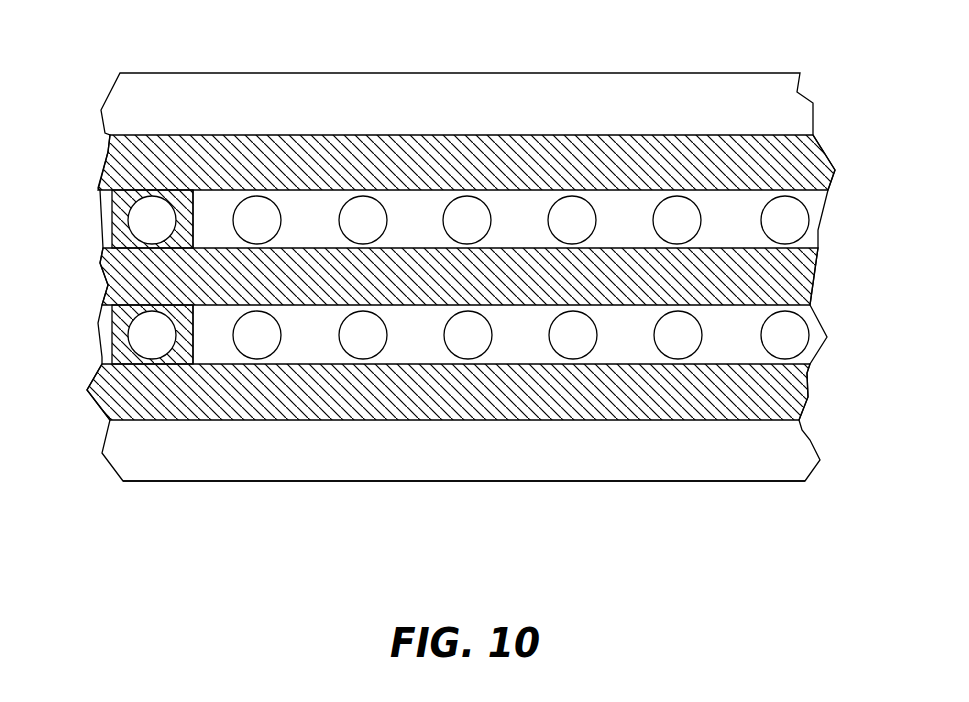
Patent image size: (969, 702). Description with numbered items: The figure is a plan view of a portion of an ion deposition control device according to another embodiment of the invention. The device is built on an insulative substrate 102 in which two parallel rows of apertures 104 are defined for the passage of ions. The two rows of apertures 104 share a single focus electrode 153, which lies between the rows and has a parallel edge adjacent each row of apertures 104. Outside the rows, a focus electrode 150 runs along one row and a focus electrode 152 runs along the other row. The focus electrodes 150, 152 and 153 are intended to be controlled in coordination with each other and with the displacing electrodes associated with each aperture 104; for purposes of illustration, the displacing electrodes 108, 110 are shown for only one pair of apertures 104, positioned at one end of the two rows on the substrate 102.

The insulative substrate 102 is at (283, 482).
The apertures 104 is at (256, 220).
The displacing electrode 108 is at (113, 337).
The displacing electrode 110 is at (194, 337).
The focus electrode 150 is at (670, 147).
The focus electrode 152 is at (673, 407).
The shared focus electrode 153 is at (790, 280).